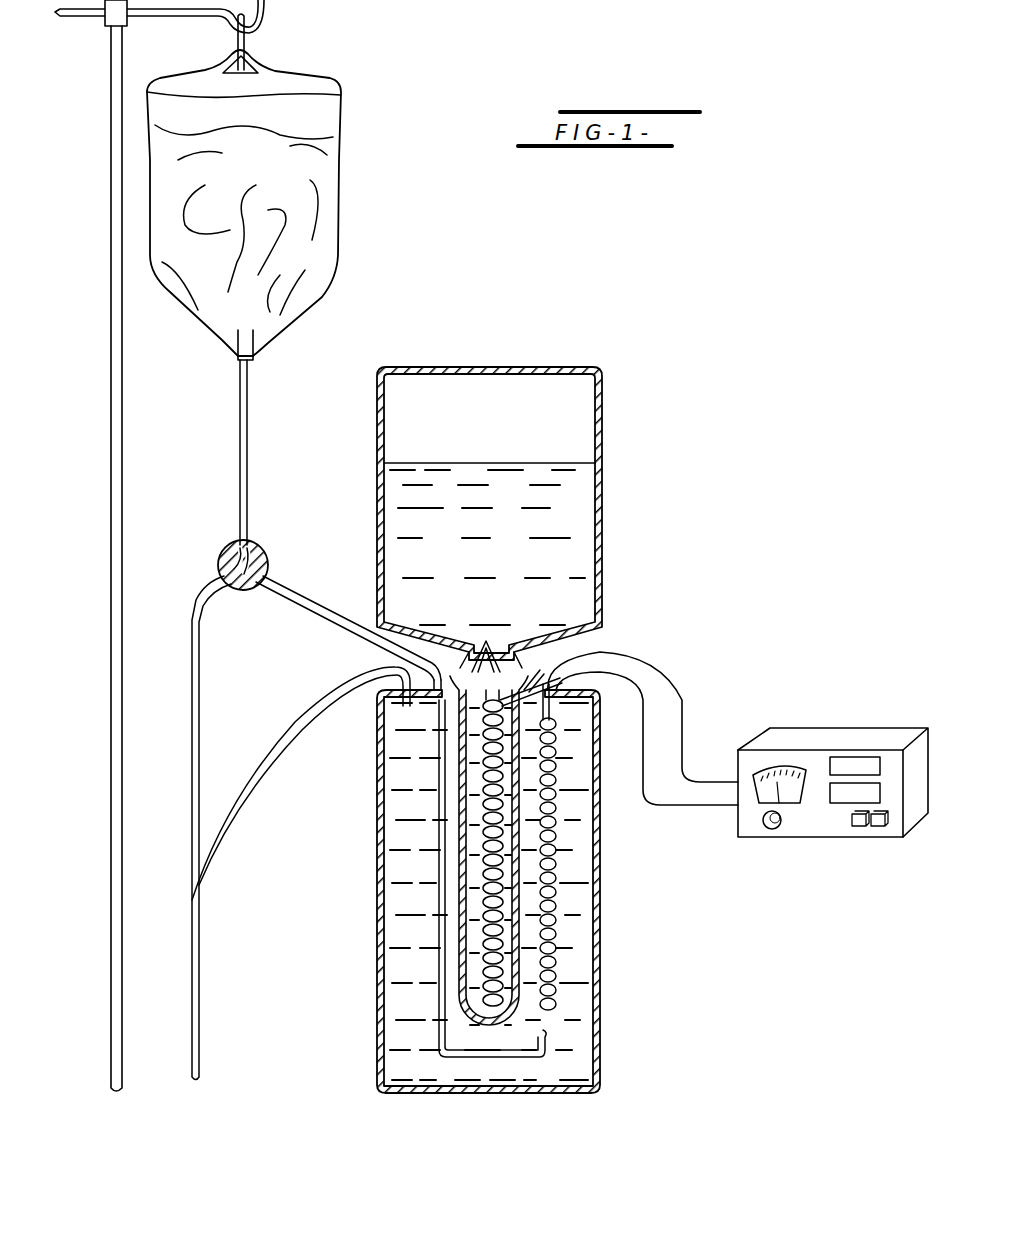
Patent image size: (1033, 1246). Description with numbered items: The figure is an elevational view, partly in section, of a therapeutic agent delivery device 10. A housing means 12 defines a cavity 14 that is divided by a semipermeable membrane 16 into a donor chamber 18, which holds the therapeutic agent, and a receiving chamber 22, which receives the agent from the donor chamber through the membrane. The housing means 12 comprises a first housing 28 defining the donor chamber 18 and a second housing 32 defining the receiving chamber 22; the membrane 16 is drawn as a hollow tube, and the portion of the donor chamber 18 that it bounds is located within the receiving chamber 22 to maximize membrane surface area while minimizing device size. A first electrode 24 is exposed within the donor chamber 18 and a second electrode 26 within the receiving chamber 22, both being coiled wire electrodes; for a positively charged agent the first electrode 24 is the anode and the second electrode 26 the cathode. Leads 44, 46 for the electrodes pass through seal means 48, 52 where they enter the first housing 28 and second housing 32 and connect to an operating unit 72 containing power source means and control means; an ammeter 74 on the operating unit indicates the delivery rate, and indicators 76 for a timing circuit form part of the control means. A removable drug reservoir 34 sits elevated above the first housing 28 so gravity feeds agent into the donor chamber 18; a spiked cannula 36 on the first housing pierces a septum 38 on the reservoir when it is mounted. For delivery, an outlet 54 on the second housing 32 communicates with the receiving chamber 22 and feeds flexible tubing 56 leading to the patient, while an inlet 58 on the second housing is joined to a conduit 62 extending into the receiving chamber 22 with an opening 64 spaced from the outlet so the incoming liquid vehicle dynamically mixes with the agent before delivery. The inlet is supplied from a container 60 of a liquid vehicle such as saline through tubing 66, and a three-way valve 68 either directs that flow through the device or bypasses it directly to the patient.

The device 10 is at (712, 438).
The housing means 12 is at (507, 884).
The cavity 14 is at (583, 958).
The semipermeable membrane 16 is at (520, 862).
The donor chamber 18 is at (452, 938).
The receiving chamber 22 is at (390, 990).
The first electrode 24 is at (496, 850).
The second electrode 26 is at (550, 886).
The first housing 28 is at (462, 812).
The second housing 32 is at (377, 796).
The drug reservoir 34 is at (603, 502).
The spiked cannula 36 is at (492, 648).
The septum 38 is at (470, 650).
The lead 44 is at (643, 707).
The lead 46 is at (645, 696).
The seal means 48 is at (526, 668).
The seal means 52 is at (575, 680).
The outlet 54 is at (400, 702).
The flexible tubing 56 is at (262, 737).
The inlet 58 is at (432, 668).
The container 60 is at (341, 143).
The conduit 62 is at (440, 886).
The opening 64 is at (548, 1050).
The tubing 66 is at (247, 440).
The three-way valve 68 is at (262, 545).
The operating unit 72 is at (852, 776).
The ammeter 74 is at (780, 785).
The indicators 76 is at (880, 765).